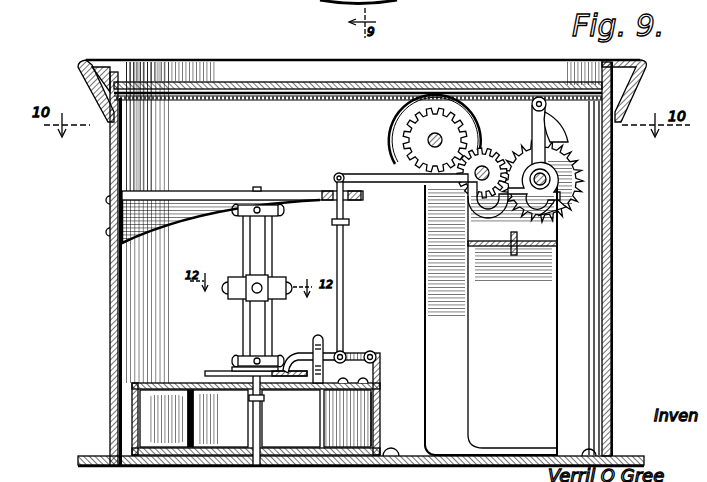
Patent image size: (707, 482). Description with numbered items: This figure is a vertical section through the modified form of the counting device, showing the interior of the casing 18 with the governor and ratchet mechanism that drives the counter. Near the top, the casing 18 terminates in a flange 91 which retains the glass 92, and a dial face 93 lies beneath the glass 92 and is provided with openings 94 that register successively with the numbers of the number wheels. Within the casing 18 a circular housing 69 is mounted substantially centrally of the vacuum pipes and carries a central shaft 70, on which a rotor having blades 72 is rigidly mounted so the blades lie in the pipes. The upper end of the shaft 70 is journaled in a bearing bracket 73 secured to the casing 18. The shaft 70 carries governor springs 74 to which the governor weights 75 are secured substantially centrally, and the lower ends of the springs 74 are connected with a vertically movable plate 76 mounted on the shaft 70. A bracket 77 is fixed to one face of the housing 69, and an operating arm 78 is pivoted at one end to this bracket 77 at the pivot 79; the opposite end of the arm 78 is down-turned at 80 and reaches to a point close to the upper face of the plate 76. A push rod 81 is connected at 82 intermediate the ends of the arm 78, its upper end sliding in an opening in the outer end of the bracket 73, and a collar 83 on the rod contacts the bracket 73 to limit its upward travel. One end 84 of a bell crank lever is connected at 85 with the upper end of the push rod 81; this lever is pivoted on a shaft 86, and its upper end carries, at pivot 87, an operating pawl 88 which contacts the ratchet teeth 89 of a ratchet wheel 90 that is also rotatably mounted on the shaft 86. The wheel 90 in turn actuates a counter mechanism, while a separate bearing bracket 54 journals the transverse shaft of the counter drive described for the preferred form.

The casing 18 is at (108, 309).
The bearing bracket 54 is at (548, 287).
The circular housing 69 is at (372, 410).
The central shaft 70 is at (260, 433).
The blades 72 is at (362, 431).
The bearing bracket 73 is at (212, 191).
The governor springs 74 is at (243, 247).
The governor weights 75 is at (285, 287).
The vertically movable plate 76 is at (213, 372).
The bracket 77 is at (380, 374).
The operating arm 78 is at (352, 351).
The pivot 79 is at (377, 353).
The down-turned end 80 is at (287, 361).
The push rod 81 is at (348, 299).
The connection 82 is at (321, 337).
The collar 83 is at (350, 222).
The end of bell crank lever 84 is at (365, 174).
The pivotal connection 85 is at (336, 174).
The shaft 86 is at (533, 172).
The pivot 87 is at (539, 97).
The operating pawl 88 is at (532, 118).
The ratchet teeth 89 is at (580, 190).
The ratchet wheel 90 is at (566, 207).
The flange 91 is at (127, 72).
The glass 92 is at (244, 81).
The dial face 93 is at (338, 102).
The openings 94 is at (450, 92).